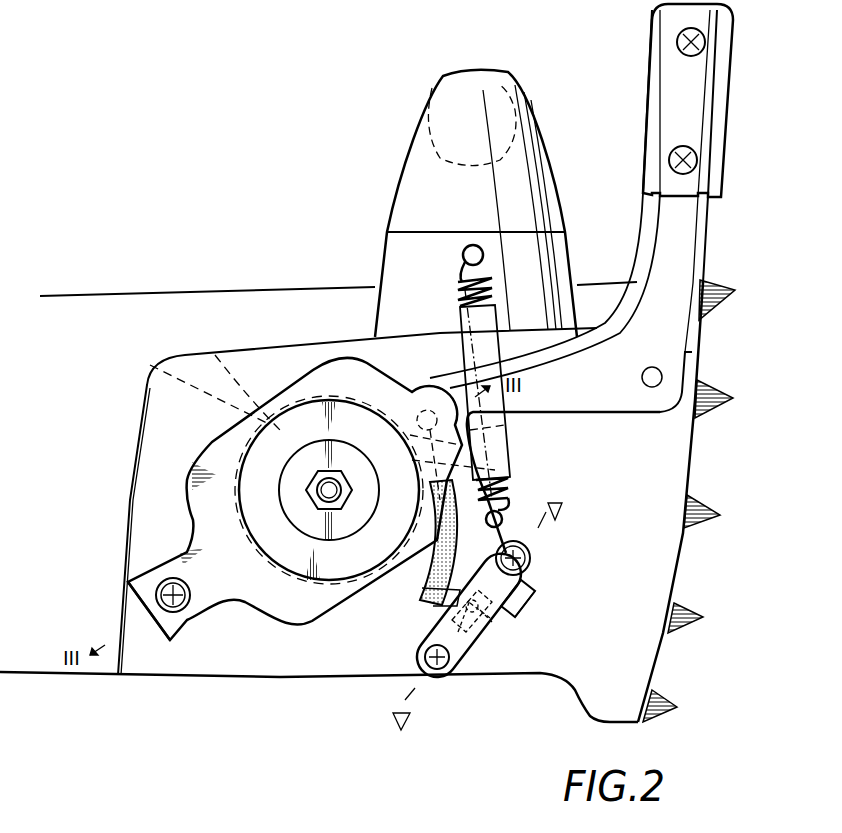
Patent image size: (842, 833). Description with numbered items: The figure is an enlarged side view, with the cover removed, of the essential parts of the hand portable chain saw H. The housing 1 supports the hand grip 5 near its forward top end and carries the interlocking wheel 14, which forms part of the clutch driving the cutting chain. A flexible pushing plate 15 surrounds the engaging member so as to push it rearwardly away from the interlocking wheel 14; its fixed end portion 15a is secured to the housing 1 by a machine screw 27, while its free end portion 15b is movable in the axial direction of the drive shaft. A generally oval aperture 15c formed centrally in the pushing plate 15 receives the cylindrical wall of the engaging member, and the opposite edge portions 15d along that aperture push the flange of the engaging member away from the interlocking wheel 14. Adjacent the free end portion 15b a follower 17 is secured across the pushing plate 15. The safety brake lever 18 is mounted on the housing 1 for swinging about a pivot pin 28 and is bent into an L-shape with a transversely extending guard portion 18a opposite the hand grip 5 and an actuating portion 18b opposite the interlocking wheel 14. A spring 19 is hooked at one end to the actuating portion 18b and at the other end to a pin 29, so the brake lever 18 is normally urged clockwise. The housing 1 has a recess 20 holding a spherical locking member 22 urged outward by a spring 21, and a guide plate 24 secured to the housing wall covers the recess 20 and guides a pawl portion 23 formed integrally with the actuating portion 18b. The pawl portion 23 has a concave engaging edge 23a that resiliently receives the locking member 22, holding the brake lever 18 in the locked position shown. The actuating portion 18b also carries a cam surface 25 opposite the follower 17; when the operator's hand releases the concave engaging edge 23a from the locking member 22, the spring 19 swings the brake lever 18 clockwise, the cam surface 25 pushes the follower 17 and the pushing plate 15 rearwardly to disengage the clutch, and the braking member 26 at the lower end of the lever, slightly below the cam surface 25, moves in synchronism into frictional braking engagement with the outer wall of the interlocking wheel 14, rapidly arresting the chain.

The housing 1 is at (275, 300).
The hand grip 5 is at (418, 188).
The interlocking wheel 14 is at (250, 452).
The pushing plate 15 is at (327, 605).
The fixed end portion 15a is at (185, 620).
The free end portion 15b is at (399, 404).
The oval aperture 15c is at (215, 355).
The opposite edge portions 15d is at (150, 365).
The follower 17 is at (415, 427).
The safety brake lever 18 is at (680, 230).
The guard portion 18a is at (695, 90).
The actuating portion 18b is at (510, 414).
The spring 19 is at (490, 282).
The recess 20 is at (473, 640).
The spring 21 is at (456, 650).
The locking member 22 is at (490, 632).
The pawl portion 23 is at (515, 595).
The concave engaging edge 23a is at (516, 622).
The guide plate 24 is at (470, 647).
The cam surface 25 is at (400, 450).
The braking member 26 is at (425, 575).
The machine screw 27 is at (156, 592).
The pivot pin 28 is at (662, 377).
The pin 29 is at (478, 253).
The chain saw H is at (181, 286).